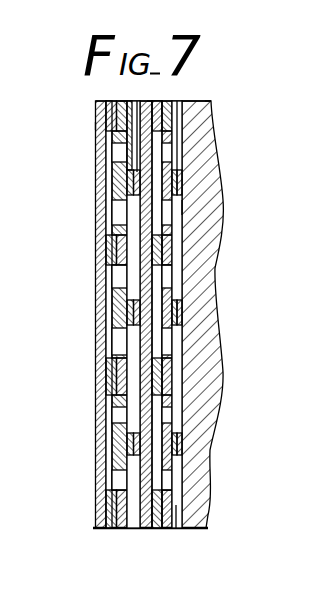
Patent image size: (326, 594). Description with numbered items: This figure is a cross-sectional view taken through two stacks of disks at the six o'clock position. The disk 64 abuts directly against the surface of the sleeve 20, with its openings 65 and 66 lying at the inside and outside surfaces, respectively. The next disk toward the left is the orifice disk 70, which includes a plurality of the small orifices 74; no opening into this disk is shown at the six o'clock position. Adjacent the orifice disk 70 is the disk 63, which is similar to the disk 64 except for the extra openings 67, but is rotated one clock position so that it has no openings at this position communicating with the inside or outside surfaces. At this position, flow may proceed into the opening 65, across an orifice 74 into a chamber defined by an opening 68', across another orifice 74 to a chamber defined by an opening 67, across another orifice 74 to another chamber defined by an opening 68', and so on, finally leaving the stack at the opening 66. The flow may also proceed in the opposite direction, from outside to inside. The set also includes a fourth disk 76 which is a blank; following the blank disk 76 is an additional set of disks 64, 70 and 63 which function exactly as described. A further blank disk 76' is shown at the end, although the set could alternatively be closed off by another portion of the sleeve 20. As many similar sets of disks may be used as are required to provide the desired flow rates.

The sleeve 20 is at (223, 187).
The disk 63 is at (97, 101).
The disk 64 is at (138, 101).
The openings 65 is at (211, 103).
The openings 66 is at (175, 530).
The openings 67 is at (178, 241).
The openings 68' is at (225, 211).
The orifice plate 70 is at (123, 101).
The fine orifices 74 is at (172, 155).
The blank disk 76 is at (221, 103).
The blank disk 76' is at (59, 149).